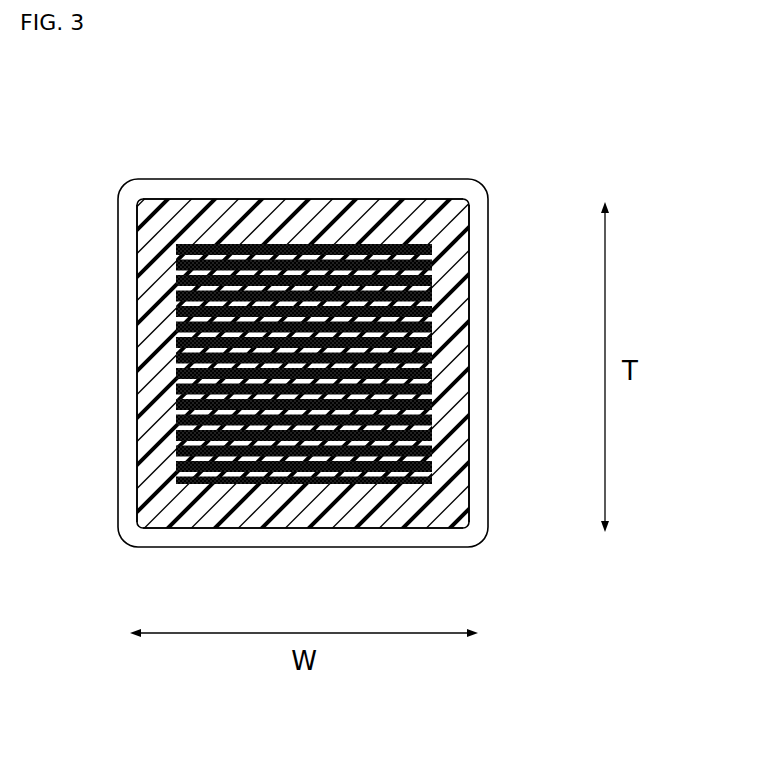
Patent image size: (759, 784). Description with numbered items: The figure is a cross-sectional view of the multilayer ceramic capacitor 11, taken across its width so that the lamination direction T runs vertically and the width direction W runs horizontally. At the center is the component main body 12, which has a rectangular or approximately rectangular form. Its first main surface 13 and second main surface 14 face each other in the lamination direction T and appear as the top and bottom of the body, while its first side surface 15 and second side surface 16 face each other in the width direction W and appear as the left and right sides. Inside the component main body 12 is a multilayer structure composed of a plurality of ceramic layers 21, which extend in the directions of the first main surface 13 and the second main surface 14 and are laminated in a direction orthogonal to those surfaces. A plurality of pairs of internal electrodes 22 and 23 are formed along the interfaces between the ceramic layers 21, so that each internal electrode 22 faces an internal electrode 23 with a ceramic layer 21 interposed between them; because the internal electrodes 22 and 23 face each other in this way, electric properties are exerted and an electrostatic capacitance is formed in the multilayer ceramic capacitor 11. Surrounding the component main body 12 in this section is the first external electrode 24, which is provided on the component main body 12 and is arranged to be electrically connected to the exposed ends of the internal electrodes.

The multilayer ceramic capacitor 11 is at (379, 345).
The component main body 12 is at (359, 310).
The first main surface 13 is at (203, 199).
The second main surface 14 is at (327, 528).
The first side surface 15 is at (138, 378).
The second side surface 16 is at (468, 393).
The ceramic layer 21 is at (274, 243).
The internal electrode 22 is at (321, 243).
The internal electrode 23 is at (280, 130).
The first external electrode 24 is at (128, 287).